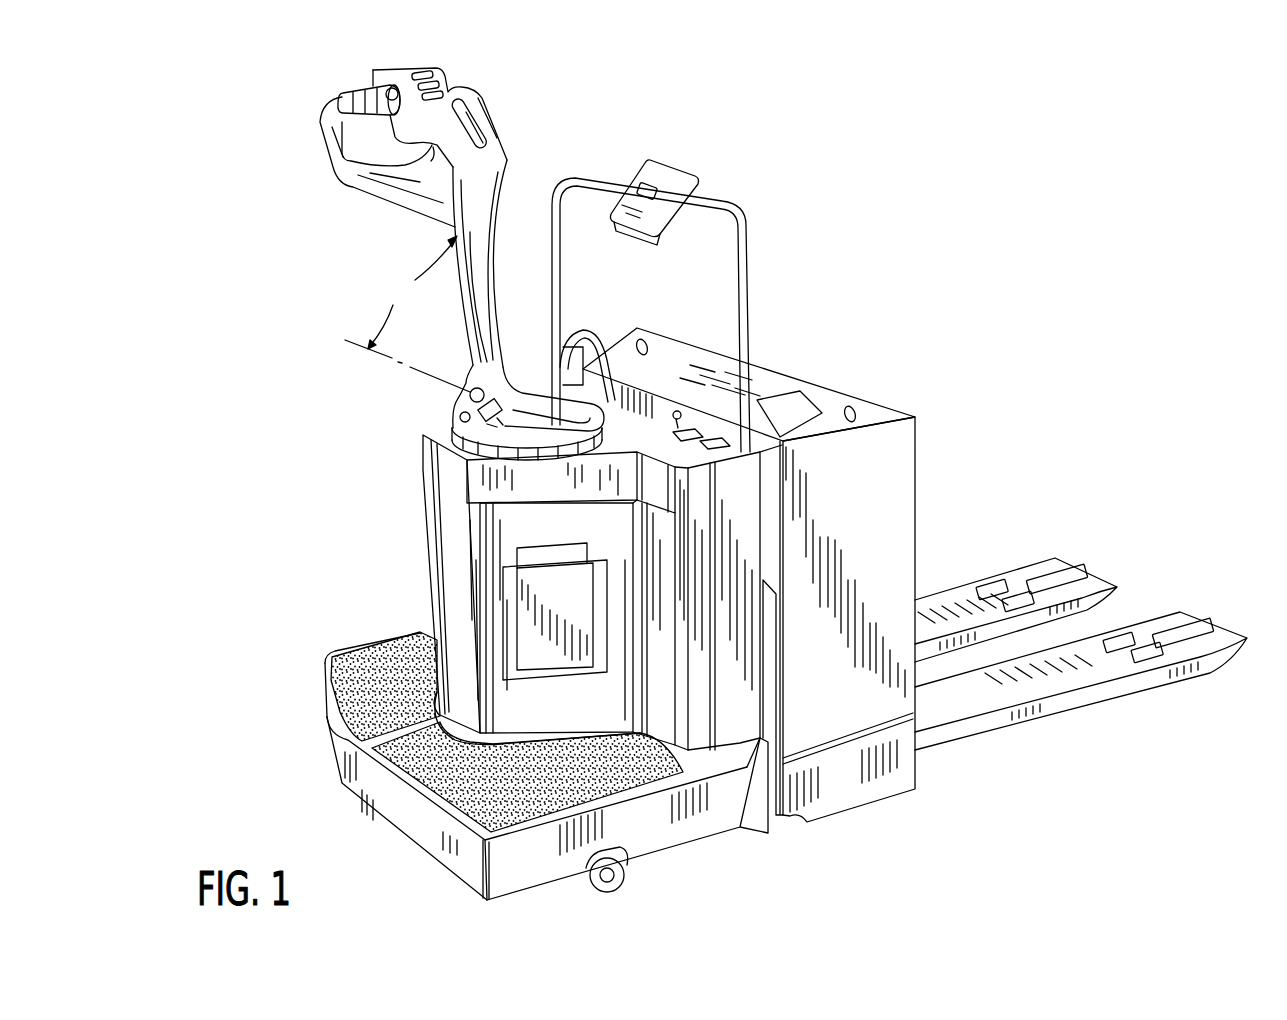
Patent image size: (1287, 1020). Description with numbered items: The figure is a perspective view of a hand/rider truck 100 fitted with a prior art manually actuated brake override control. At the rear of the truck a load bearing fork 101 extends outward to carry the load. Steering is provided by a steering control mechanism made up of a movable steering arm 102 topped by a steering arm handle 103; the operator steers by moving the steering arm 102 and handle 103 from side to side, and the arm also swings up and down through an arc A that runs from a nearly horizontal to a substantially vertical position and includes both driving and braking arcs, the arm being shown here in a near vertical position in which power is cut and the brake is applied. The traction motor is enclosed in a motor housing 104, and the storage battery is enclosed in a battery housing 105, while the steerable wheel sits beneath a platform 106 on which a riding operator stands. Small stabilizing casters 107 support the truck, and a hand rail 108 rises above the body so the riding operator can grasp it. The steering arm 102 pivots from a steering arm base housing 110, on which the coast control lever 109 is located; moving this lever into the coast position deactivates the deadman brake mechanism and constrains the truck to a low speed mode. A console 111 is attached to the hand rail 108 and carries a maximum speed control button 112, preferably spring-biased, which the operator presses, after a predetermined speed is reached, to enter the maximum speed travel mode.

The hand/rider truck 100 is at (1025, 430).
The load bearing fork 101 is at (1150, 620).
The steering arm 102 is at (466, 294).
The steering arm handle 103 is at (333, 172).
The motor housing 104 is at (452, 560).
The battery housing 105 is at (822, 387).
The platform 106 is at (425, 775).
The stabilizing casters 107 is at (625, 867).
The hand rail 108 is at (750, 293).
The coast control lever 109 is at (460, 432).
The steering arm base housing 110 is at (467, 395).
The console 111 is at (666, 157).
The maximum speed control button 112 is at (660, 189).